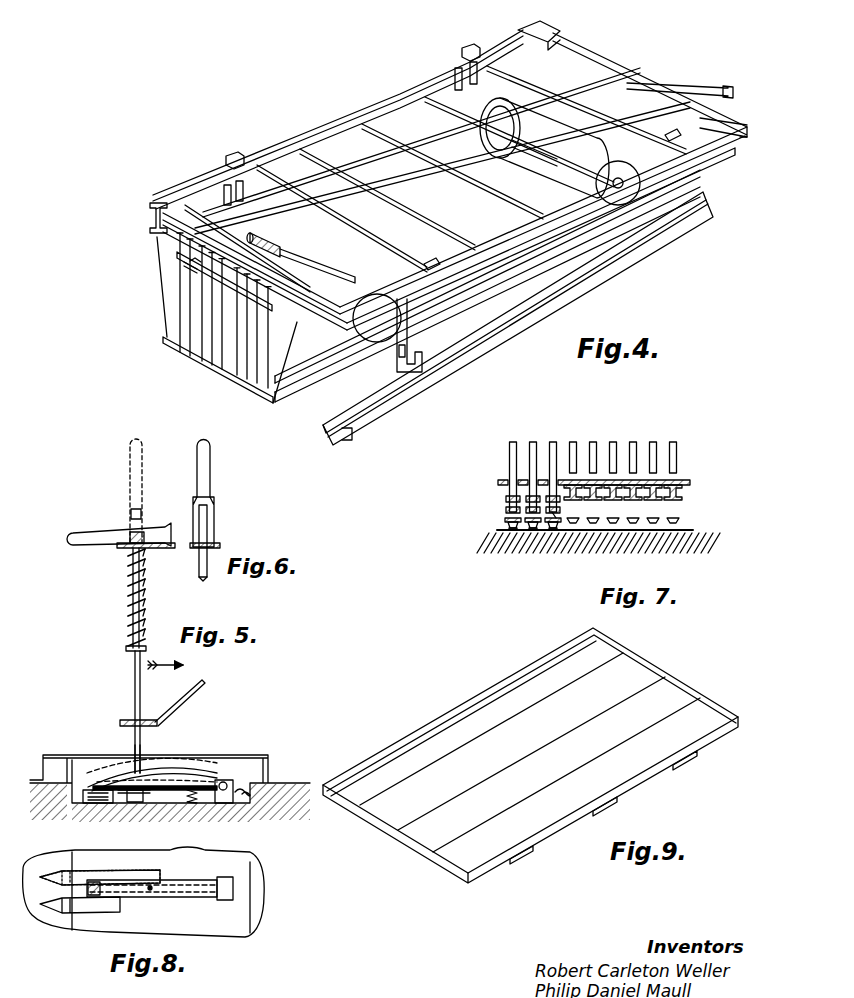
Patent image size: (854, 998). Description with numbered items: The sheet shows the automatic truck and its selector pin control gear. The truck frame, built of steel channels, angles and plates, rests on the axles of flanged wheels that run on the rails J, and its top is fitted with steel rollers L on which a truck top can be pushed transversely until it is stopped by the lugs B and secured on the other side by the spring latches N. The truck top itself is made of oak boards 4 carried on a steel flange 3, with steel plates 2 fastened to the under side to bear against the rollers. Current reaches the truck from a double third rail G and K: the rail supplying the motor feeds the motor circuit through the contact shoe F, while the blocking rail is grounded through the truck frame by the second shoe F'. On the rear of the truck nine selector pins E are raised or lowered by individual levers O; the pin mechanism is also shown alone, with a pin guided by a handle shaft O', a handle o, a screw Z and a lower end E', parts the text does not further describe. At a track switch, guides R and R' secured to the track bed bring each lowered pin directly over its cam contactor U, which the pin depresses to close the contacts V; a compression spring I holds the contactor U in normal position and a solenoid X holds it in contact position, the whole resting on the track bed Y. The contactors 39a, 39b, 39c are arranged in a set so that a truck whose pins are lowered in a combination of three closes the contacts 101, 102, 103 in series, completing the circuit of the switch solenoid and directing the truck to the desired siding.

In FIG. 4, the lugs B is at (353, 97).
In FIG. 4, the steel rollers L is at (312, 200).
In FIG. 4, the rails J is at (681, 80).
In FIG. 4, the spring latches N is at (439, 267).
In FIG. 4, the levers O is at (174, 272).
In FIG. 6, the levers O is at (207, 511).
In FIG. 4, the selector pin E is at (227, 318).
In FIG. 5, the selector pin E is at (162, 712).
In FIG. 7, the selector pin E is at (579, 475).
In FIG. 4, the contact shoe F is at (430, 335).
In FIG. 4, the shoe F' is at (424, 342).
In FIG. 4, the third rail G is at (325, 427).
In FIG. 4, the third rail K is at (327, 442).
In FIG. 5, the handle shaft O' is at (147, 490).
In FIG. 5, the handle o is at (98, 530).
In FIG. 5, the screw Z is at (144, 596).
In FIG. 5, the tine lower end E' is at (150, 751).
In FIG. 5, the cam contactor U is at (183, 780).
In FIG. 7, the cam contactor U is at (684, 491).
In FIG. 8, the cam contactor U is at (190, 880).
In FIG. 5, the guides R is at (160, 764).
In FIG. 7, the guides R is at (593, 469).
In FIG. 8, the guides R is at (100, 866).
In FIG. 8, the second tine point R' is at (80, 914).
In FIG. 5, the solenoid X is at (100, 803).
In FIG. 5, the contacts V is at (147, 791).
In FIG. 7, the contacts V is at (682, 519).
In FIG. 5, the compression spring I is at (203, 797).
In FIG. 7, the contactor 39a is at (506, 499).
In FIG. 7, the contactor 39b is at (526, 510).
In FIG. 7, the contactor 39c is at (558, 514).
In FIG. 7, the bed Y is at (695, 527).
In FIG. 7, the contact 101 is at (509, 529).
In FIG. 7, the contact 102 is at (531, 529).
In FIG. 7, the contact 103 is at (552, 529).
In FIG. 9, the steel plates 2 is at (603, 814).
In FIG. 9, the steel flange 3 is at (694, 684).
In FIG. 9, the oak boards 4 is at (530, 755).